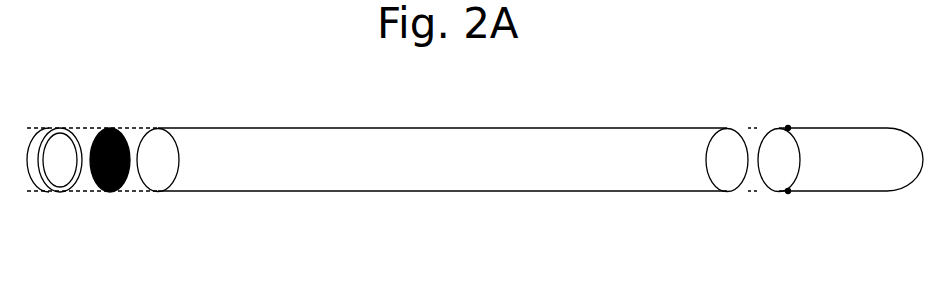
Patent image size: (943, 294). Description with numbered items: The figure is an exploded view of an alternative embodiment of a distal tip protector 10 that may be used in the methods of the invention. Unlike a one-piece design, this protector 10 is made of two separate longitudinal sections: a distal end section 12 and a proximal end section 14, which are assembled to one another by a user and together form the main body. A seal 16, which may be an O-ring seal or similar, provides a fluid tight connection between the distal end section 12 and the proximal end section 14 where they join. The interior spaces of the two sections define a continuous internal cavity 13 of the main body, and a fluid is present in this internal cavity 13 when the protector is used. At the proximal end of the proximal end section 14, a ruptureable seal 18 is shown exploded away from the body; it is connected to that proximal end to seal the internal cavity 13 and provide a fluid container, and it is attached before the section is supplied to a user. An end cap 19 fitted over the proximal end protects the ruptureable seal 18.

The distal tip protector 10 is at (346, 116).
The distal end section 12 is at (854, 197).
The internal cavity 13 is at (633, 148).
The proximal end section 14 is at (516, 197).
The seal 16 is at (788, 127).
The ruptureable seal 18 is at (110, 128).
The end cap 19 is at (52, 127).